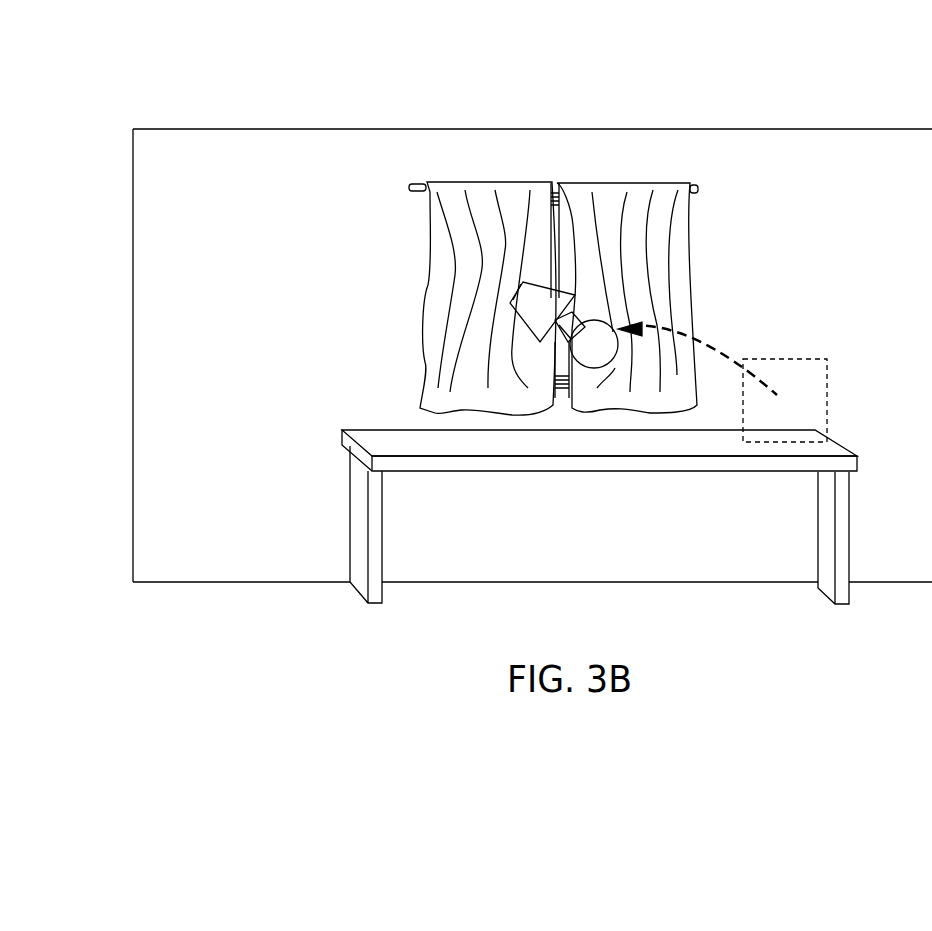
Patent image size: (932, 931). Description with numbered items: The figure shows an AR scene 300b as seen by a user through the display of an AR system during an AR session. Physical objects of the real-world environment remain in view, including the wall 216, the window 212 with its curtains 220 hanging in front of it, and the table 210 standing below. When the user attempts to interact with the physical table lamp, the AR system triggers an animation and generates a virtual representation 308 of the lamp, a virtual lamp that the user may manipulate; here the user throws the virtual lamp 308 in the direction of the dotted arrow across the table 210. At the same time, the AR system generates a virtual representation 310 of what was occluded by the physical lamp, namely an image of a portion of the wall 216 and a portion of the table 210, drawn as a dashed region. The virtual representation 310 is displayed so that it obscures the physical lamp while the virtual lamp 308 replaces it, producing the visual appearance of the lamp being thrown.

The AR scene 300b is at (532, 304).
The wall 216 is at (863, 155).
The window 212 is at (512, 198).
The virtual representation of the lamp 308 is at (560, 298).
The curtains 220 is at (667, 290).
The virtual representation of what was occluded 310 is at (827, 377).
The table 210 is at (828, 440).